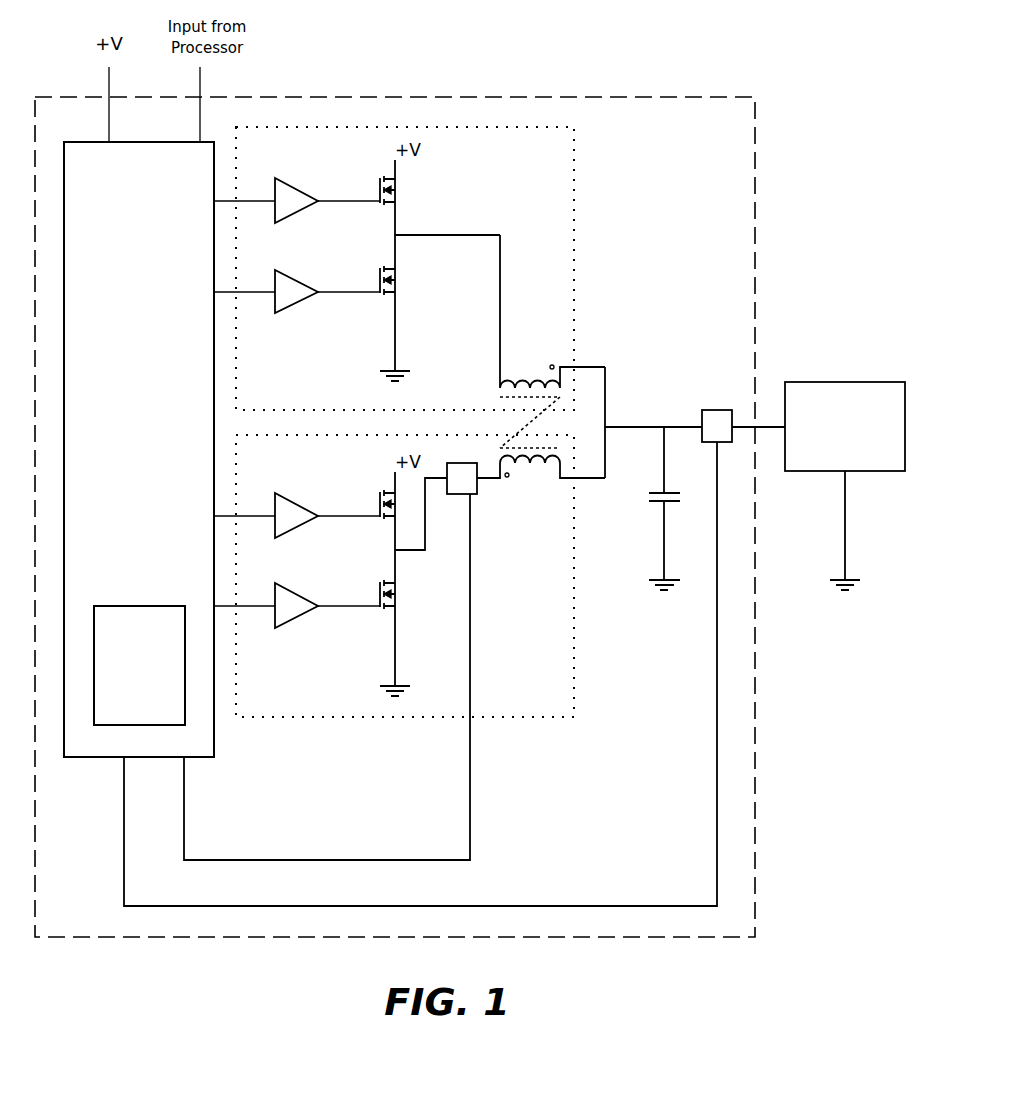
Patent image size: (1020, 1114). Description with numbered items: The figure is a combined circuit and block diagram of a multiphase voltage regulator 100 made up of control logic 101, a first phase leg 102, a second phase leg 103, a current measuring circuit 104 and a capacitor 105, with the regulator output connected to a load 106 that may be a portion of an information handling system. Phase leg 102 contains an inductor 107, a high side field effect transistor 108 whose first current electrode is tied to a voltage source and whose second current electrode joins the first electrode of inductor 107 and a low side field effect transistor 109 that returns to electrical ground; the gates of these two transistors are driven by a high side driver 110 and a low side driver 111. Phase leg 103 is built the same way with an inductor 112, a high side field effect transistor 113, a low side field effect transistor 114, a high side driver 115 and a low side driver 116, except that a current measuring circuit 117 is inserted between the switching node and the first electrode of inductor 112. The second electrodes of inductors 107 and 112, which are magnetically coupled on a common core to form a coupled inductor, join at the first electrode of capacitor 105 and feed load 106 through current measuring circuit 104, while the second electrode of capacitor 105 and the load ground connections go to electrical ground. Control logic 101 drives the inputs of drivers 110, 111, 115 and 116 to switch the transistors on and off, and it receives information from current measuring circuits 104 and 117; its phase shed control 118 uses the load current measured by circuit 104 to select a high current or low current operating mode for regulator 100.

The multiphase voltage regulator 100 is at (327, 97).
The control logic 101 is at (88, 142).
The phase leg 102 is at (575, 171).
The phase leg 103 is at (576, 556).
The current measuring circuit 104 is at (716, 410).
The capacitor 105 is at (659, 488).
The load 106 is at (830, 382).
The inductor 107 is at (530, 368).
The high side field effect transistor 108 is at (376, 179).
The low side field effect transistor 109 is at (376, 268).
The high side driver 110 is at (292, 184).
The low side driver 111 is at (292, 275).
The inductor 112 is at (522, 478).
The high side field effect transistor 113 is at (377, 492).
The low side field effect transistor 114 is at (377, 581).
The high side driver 115 is at (292, 499).
The low side driver 116 is at (292, 590).
The current measuring circuit 117 is at (469, 497).
The phase shed control 118 is at (125, 606).